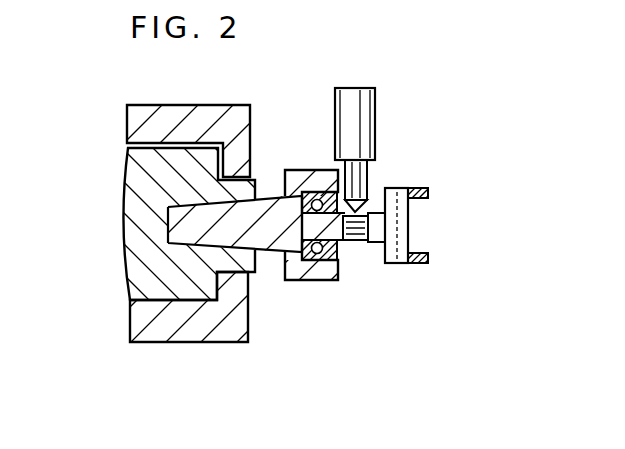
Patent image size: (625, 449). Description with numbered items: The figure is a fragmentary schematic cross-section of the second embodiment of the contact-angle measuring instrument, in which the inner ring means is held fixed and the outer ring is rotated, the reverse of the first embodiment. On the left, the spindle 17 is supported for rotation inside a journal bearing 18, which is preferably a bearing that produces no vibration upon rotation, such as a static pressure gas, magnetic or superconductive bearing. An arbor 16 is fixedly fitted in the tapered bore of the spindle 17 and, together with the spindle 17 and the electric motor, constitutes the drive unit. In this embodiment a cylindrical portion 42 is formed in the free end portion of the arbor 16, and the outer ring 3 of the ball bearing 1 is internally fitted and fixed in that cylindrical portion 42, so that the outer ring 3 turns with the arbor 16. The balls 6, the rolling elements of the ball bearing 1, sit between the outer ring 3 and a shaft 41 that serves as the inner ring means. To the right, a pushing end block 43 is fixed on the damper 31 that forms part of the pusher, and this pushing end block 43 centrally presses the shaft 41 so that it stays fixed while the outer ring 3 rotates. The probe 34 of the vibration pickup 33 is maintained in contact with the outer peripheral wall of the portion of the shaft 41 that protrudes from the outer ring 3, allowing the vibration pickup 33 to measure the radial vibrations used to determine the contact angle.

The ball bearing 1 is at (342, 252).
The outer ring 3 is at (325, 280).
The balls 6 is at (323, 190).
The arbor 16 is at (272, 350).
The spindle 17 is at (140, 275).
The journal bearing 18 is at (138, 127).
The damper 31 is at (427, 265).
The vibration pickup 33 is at (377, 113).
The probe 34 is at (373, 197).
The shaft 41 is at (357, 240).
The cylindrical portion 42 is at (332, 278).
The pushing end block 43 is at (402, 185).